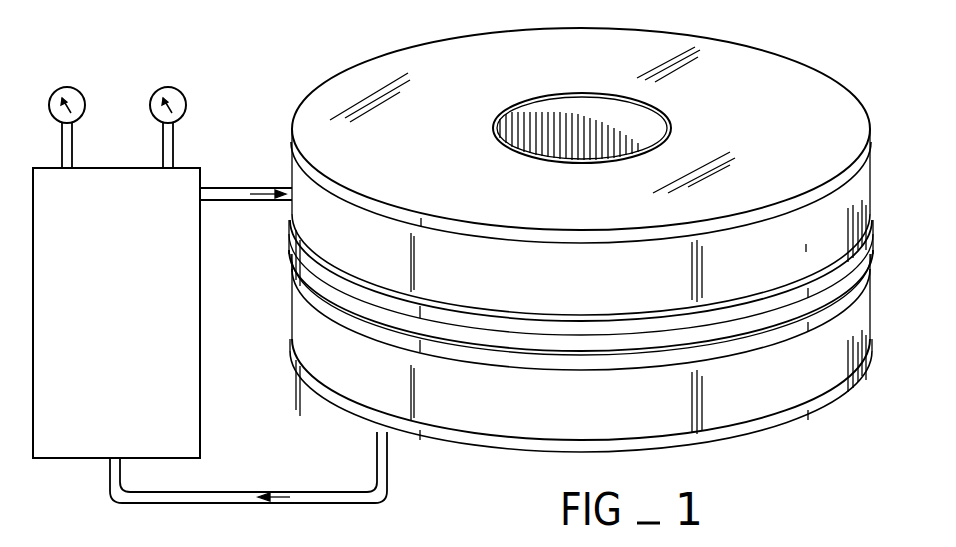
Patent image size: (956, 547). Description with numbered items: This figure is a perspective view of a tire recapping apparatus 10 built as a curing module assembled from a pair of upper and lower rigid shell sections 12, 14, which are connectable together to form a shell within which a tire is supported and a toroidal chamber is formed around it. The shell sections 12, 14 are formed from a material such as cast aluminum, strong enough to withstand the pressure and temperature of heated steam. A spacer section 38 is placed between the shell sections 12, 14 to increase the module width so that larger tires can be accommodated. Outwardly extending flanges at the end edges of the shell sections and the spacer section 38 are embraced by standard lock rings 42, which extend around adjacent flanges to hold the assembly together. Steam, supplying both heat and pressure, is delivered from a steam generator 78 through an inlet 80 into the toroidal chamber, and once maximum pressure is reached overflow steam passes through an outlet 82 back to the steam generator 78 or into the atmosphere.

The tire recapping apparatus 10 is at (775, 41).
The upper rigid shell section 12 is at (745, 410).
The lower rigid shell section 14 is at (757, 270).
The spacer section 38 is at (853, 277).
The lock ring 42 is at (292, 289).
The steam generator 78 is at (120, 400).
The inlet 80 is at (231, 186).
The outlet 82 is at (324, 490).